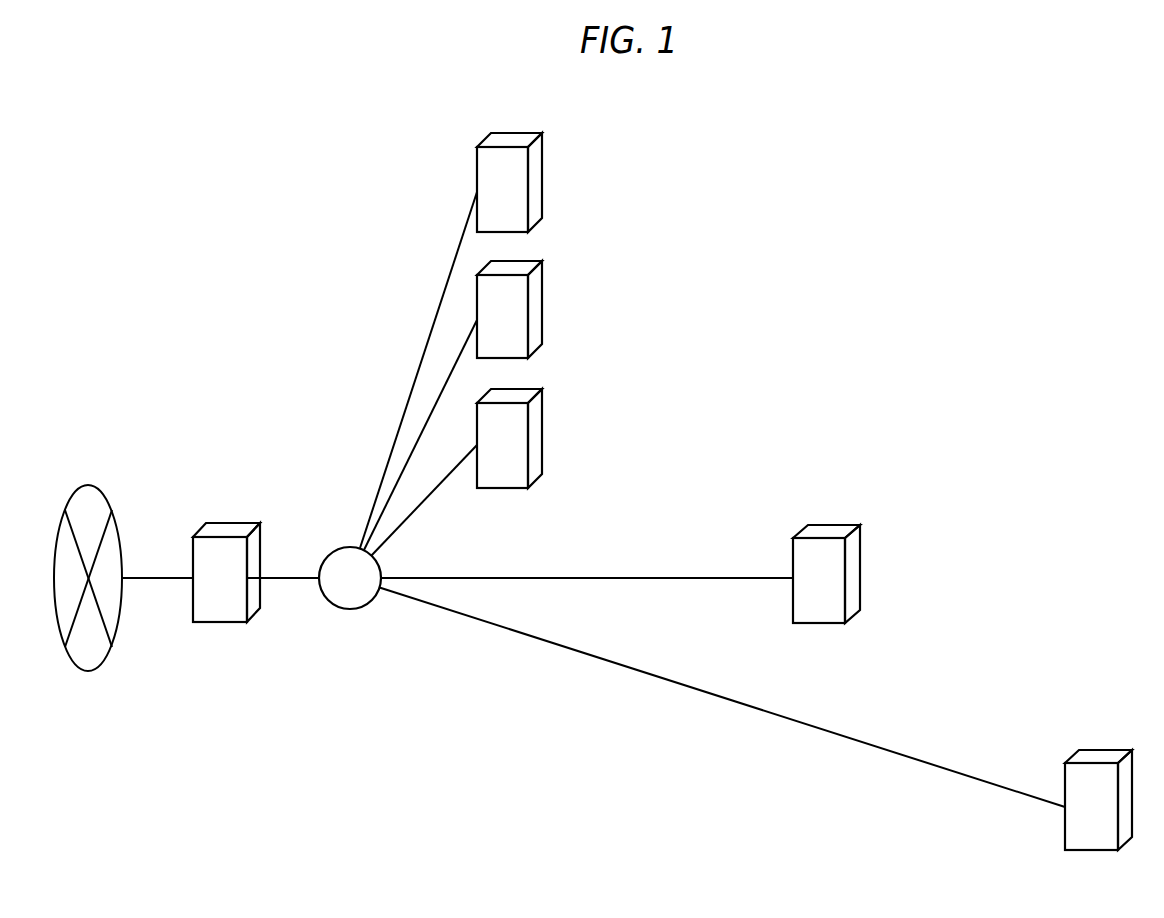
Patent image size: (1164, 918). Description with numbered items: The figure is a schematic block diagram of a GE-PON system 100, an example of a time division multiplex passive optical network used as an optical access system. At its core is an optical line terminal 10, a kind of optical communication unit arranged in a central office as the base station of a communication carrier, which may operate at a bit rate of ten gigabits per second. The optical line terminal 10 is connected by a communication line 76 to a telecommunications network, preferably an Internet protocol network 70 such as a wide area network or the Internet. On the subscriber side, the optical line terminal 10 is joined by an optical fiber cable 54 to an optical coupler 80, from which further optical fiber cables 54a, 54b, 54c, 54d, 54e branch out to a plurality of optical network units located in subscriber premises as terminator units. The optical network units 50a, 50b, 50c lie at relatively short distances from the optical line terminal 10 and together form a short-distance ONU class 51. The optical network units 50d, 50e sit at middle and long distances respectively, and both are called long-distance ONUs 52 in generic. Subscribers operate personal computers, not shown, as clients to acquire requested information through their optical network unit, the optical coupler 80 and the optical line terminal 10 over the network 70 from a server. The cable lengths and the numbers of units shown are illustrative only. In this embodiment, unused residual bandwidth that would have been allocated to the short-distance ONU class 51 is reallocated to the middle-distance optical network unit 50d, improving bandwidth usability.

The GE-PON system 100 is at (267, 225).
The IP network 70 is at (88, 485).
The communication line 76 is at (158, 578).
The optical line terminal 10 is at (220, 622).
The optical fiber cable 54 is at (290, 578).
The optical coupler 80 is at (350, 610).
The optical fiber cable 54a is at (408, 403).
The optical fiber cable 54b is at (405, 463).
The optical fiber cable 54c is at (400, 527).
The optical fiber cable 54d is at (605, 578).
The optical fiber cable 54e is at (709, 692).
The optical network unit 50a is at (535, 180).
The optical network unit 50b is at (535, 308).
The optical network unit 50c is at (542, 438).
The short-distance ONU class 51 is at (573, 310).
The middle-distance optical network unit 50d is at (828, 525).
The long-distance optical network unit 50e is at (1065, 835).
The long-distance ONUs 52 is at (962, 660).